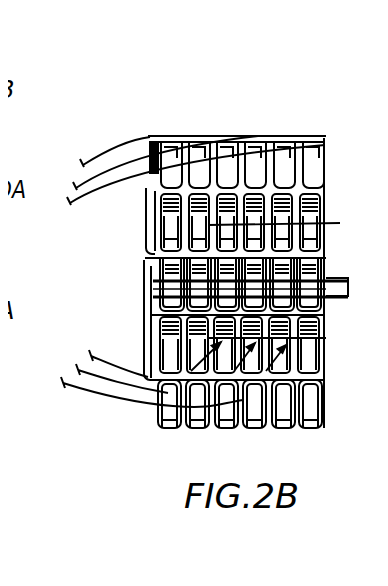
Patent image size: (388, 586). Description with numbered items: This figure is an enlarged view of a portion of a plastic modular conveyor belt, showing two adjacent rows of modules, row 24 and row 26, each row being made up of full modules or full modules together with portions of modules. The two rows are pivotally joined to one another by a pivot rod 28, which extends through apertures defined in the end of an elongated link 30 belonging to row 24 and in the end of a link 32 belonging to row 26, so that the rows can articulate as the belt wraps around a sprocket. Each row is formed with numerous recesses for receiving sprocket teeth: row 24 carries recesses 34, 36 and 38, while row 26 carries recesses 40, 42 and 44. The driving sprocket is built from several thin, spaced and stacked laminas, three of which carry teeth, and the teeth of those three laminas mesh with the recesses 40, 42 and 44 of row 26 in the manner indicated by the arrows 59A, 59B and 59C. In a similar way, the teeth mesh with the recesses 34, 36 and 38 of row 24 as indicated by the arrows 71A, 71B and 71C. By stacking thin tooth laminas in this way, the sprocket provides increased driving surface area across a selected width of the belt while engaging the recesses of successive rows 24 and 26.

The row of modules 24 is at (318, 330).
The row of modules 26 is at (311, 190).
The pivot rod 28 is at (340, 289).
The elongated link 30 is at (317, 310).
The link 32 is at (315, 240).
The recess 34 is at (200, 330).
The recess 36 is at (320, 348).
The recess 38 is at (318, 370).
The recess 40 is at (200, 217).
The recess 42 is at (163, 242).
The recess 44 is at (282, 220).
The arrow 59A is at (97, 184).
The arrow 59B is at (128, 150).
The arrow 59C is at (205, 127).
The arrow 71A is at (113, 366).
The arrow 71B is at (120, 379).
The arrow 71C is at (132, 394).